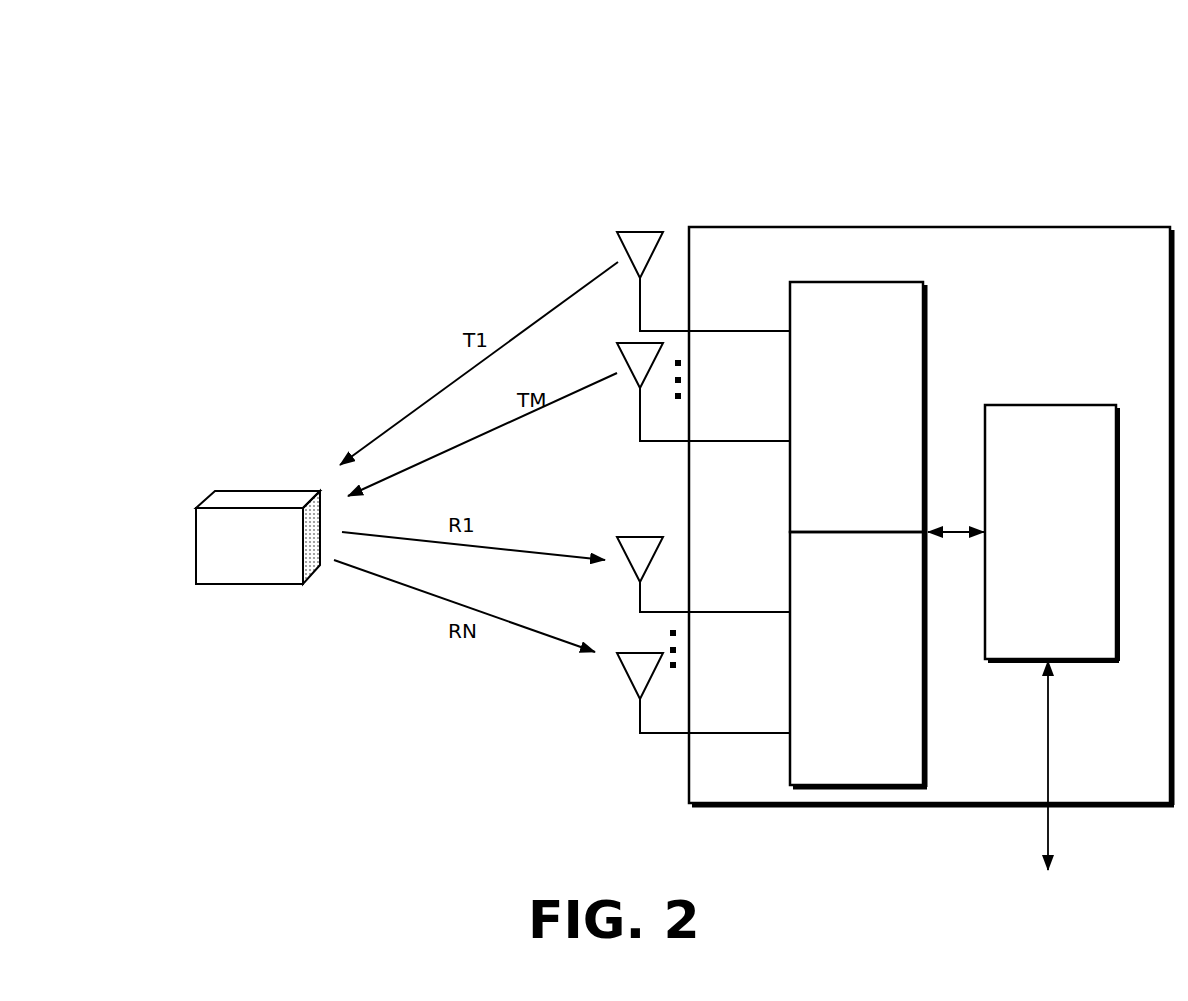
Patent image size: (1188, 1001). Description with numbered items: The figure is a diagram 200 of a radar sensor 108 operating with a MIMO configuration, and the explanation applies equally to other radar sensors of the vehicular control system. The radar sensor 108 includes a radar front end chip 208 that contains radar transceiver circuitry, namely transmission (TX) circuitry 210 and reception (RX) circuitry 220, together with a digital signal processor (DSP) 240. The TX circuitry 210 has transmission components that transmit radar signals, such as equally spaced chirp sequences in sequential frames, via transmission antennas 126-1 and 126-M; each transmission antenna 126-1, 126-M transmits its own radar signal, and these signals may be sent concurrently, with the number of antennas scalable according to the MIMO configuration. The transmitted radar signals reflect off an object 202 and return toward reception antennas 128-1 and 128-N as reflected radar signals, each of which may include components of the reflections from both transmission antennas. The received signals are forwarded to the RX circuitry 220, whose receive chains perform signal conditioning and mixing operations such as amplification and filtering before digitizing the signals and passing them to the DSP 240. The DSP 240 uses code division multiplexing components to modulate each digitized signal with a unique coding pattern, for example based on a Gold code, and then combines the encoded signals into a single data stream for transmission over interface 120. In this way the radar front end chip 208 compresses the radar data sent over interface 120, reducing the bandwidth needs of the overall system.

The diagram 200 is at (302, 78).
The radar sensor 108 is at (662, 148).
The transmission antenna 126-1 is at (648, 232).
The transmission antenna 126-M is at (637, 382).
The reception antenna 128-1 is at (635, 537).
The reception antenna 128-N is at (630, 683).
The object 202 is at (278, 492).
The radar front end chip 208 is at (978, 227).
The transmission (TX) circuitry 210 is at (870, 282).
The reception (RX) circuitry 220 is at (927, 710).
The digital signal processor (DSP) 240 is at (1080, 405).
The interface 120 is at (1048, 822).